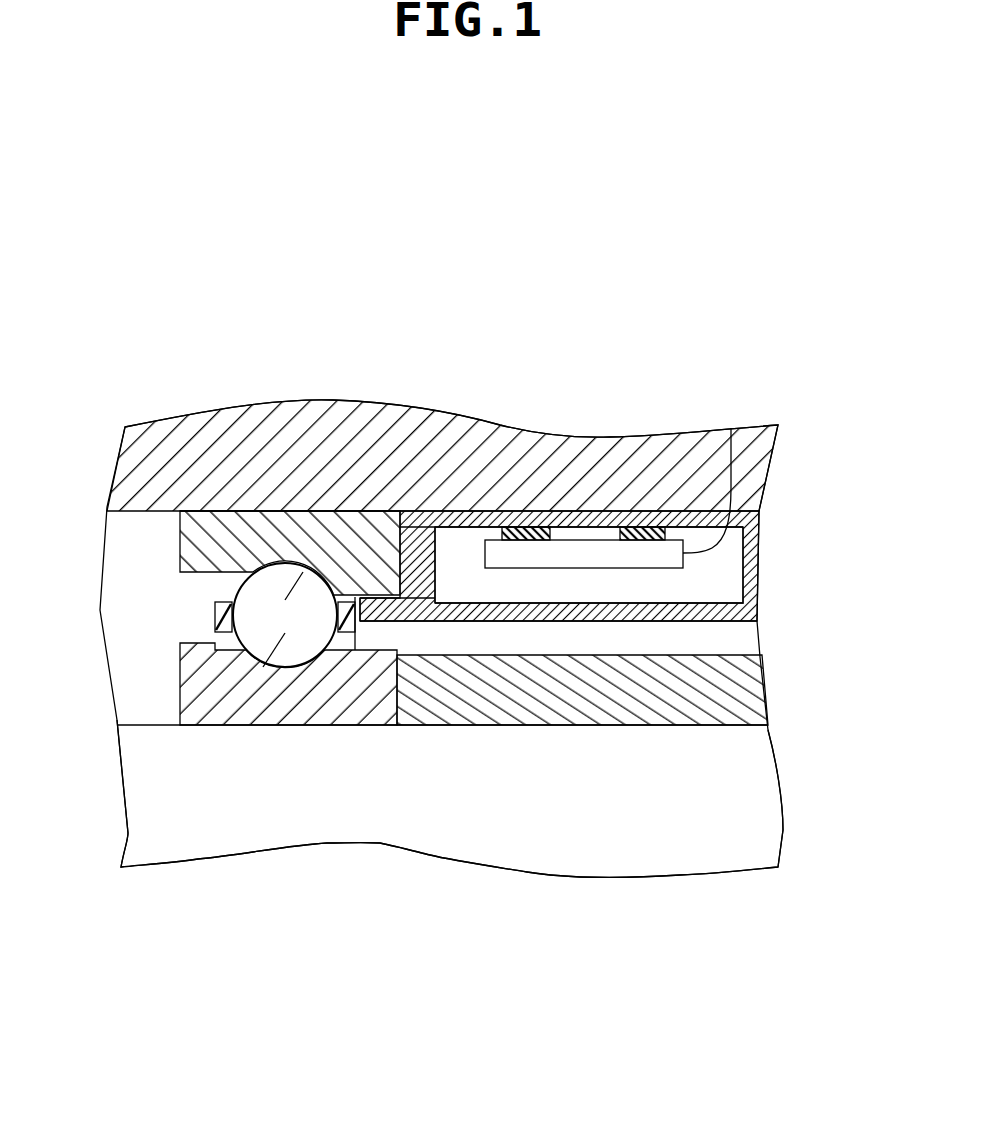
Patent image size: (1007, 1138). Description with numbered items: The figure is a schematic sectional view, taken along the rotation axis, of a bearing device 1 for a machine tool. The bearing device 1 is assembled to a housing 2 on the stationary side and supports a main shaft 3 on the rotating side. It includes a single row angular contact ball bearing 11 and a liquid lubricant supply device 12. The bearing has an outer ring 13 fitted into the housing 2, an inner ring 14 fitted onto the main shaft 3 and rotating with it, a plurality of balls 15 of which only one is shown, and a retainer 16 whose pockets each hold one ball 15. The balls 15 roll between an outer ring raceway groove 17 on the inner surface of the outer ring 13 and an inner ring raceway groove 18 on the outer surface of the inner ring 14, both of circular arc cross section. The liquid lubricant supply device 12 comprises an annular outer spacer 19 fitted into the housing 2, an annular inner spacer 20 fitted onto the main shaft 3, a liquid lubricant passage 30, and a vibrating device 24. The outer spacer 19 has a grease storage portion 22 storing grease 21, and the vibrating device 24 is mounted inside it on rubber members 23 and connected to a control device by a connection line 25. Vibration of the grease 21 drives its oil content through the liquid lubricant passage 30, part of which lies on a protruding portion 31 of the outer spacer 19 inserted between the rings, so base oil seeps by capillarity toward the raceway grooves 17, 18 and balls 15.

The bearing device 1 is at (137, 588).
The housing 2 is at (162, 424).
The main shaft 3 is at (509, 776).
The single row angular contact ball bearing 11 is at (274, 500).
The liquid lubricant supply device 12 is at (698, 501).
The outer ring 13 is at (215, 518).
The inner ring 14 is at (198, 705).
The ball 15 is at (307, 633).
The retainer 16 is at (353, 597).
The outer ring raceway groove 17 is at (285, 601).
The inner ring raceway groove 18 is at (285, 634).
The outer spacer 19 is at (590, 523).
The inner spacer 20 is at (613, 690).
The grease 21 is at (598, 590).
The grease storage portion 22 is at (462, 550).
The rubber member 23 is at (532, 528).
The vibrating device 24 is at (563, 553).
The connection line 25 is at (733, 485).
The liquid lubricant passage 30 is at (388, 597).
The protruding portion 31 is at (392, 608).